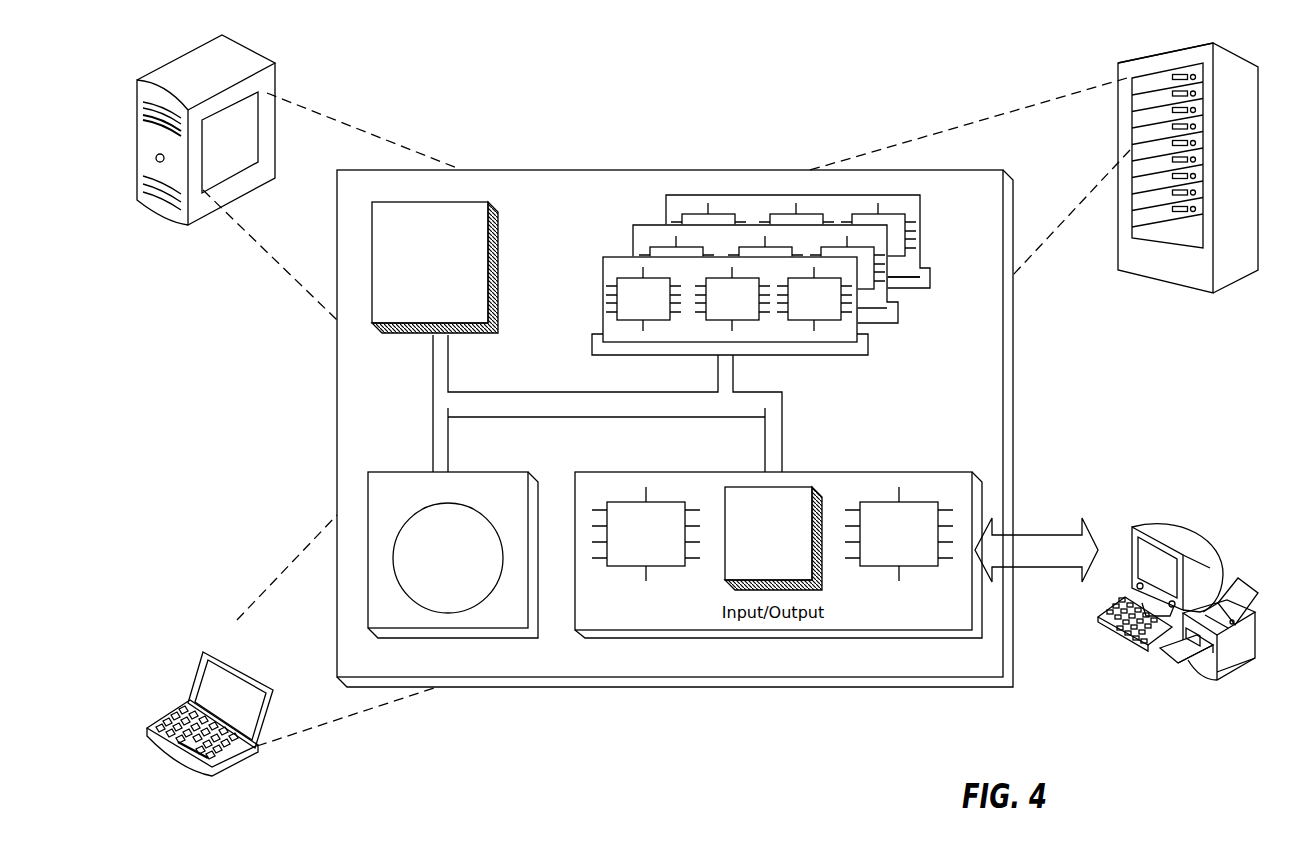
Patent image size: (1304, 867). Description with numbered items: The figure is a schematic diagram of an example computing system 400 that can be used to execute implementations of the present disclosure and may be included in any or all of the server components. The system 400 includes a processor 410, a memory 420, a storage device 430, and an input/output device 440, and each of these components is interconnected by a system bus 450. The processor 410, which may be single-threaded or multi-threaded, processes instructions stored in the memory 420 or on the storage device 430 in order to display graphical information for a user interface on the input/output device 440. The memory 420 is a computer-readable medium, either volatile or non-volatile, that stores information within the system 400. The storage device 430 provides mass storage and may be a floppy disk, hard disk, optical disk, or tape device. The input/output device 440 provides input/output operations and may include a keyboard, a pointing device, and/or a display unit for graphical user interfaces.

The computing system 400 is at (512, 96).
The processor 410 is at (479, 316).
The memory 420 is at (927, 324).
The storage device 430 is at (518, 620).
The input/output device 440 is at (1132, 527).
The system bus 450 is at (601, 406).